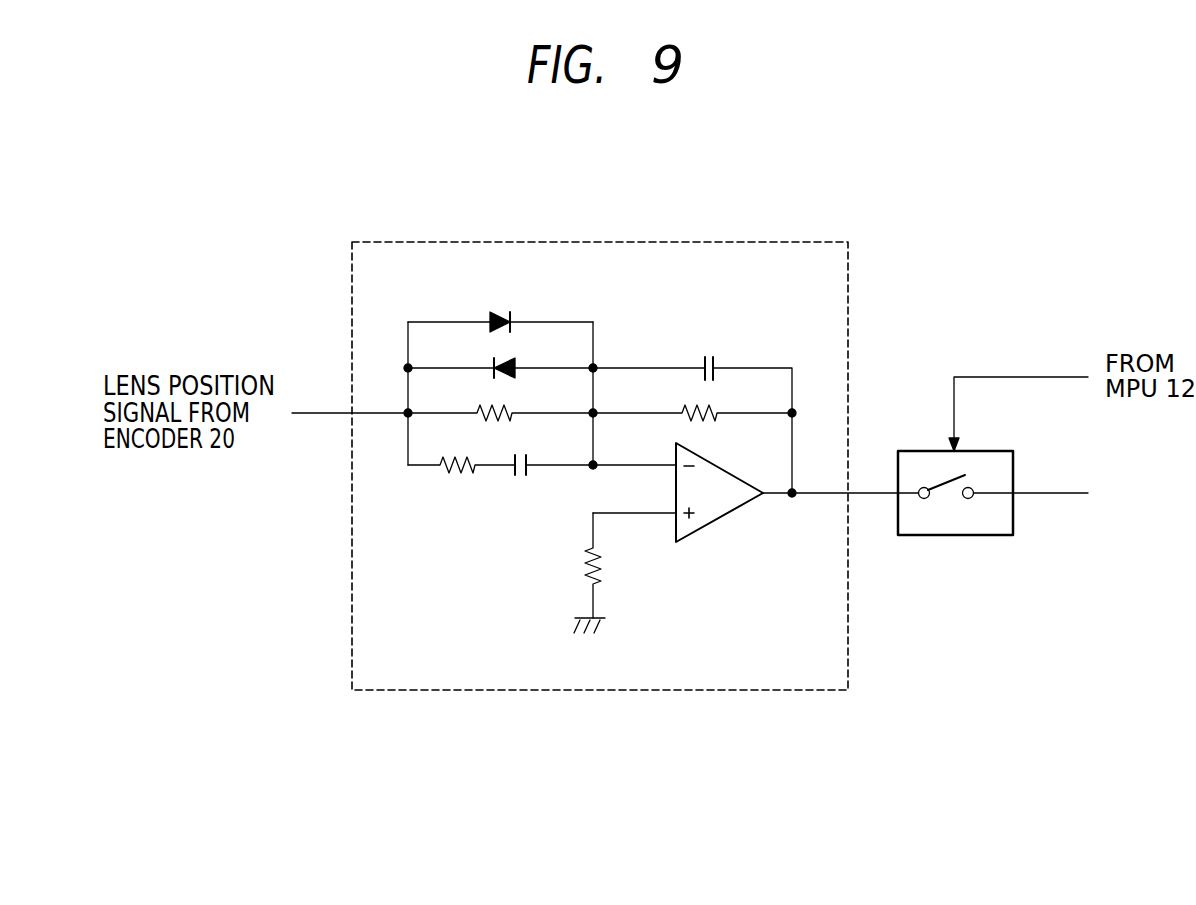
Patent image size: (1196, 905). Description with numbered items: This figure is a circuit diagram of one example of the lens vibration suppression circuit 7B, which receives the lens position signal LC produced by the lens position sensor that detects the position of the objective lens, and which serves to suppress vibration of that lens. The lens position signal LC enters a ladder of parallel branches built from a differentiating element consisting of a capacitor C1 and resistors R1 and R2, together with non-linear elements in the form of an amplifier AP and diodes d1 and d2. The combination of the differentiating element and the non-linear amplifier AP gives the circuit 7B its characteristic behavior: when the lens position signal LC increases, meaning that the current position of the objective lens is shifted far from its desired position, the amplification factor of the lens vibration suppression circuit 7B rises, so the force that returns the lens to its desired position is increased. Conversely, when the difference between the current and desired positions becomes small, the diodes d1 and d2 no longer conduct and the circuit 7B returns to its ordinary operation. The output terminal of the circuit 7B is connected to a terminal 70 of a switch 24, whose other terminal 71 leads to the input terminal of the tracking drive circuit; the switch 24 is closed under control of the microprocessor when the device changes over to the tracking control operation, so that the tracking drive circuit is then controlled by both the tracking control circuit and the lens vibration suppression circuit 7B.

The lens vibration suppression circuit 7B is at (768, 241).
The lens position signal LC is at (314, 411).
The diode d1 is at (494, 310).
The diode d2 is at (515, 362).
The resistor R1 is at (464, 446).
The resistor R2 is at (511, 404).
The capacitor C1 is at (530, 446).
The amplifier AP is at (714, 462).
The switch 24 is at (992, 496).
The terminal 70 is at (920, 452).
The terminal 71 is at (978, 452).